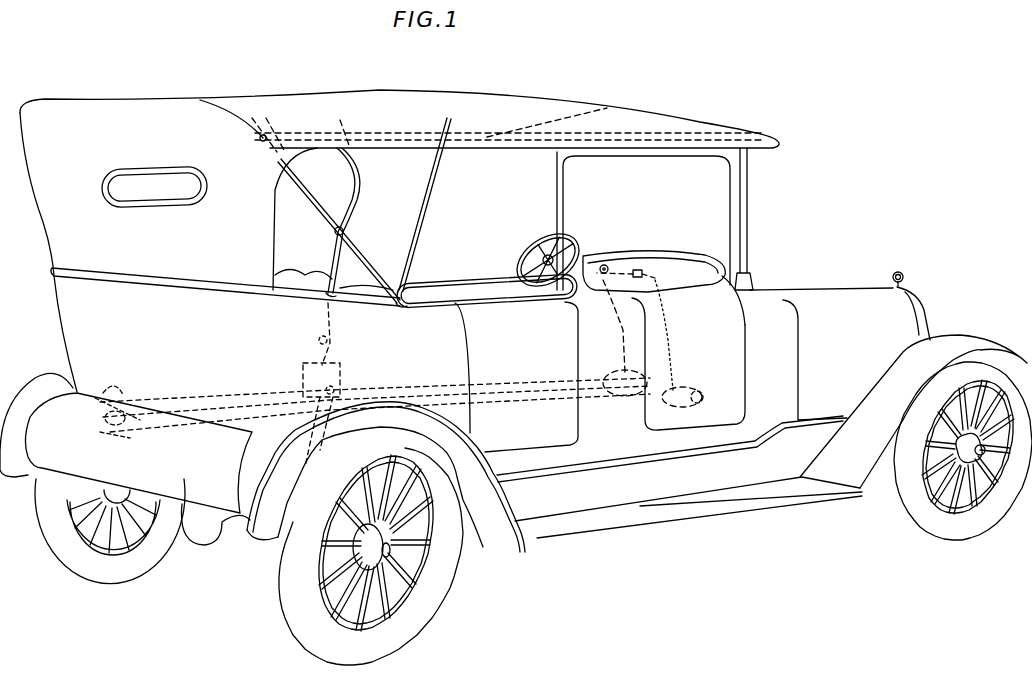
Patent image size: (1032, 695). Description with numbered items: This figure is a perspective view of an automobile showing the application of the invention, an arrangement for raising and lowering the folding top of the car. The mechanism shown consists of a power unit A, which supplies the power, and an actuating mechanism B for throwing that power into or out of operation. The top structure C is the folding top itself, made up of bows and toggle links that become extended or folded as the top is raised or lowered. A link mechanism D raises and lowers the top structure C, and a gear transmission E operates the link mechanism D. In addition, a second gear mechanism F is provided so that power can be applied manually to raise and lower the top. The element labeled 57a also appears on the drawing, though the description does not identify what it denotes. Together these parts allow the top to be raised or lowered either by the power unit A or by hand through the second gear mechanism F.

The power unit A is at (613, 388).
The actuating mechanism B is at (639, 270).
The top structure C is at (478, 142).
The link mechanism D is at (340, 353).
The gear transmission E is at (285, 418).
The second gear mechanism F is at (427, 400).
The rear actuator 57a is at (108, 392).